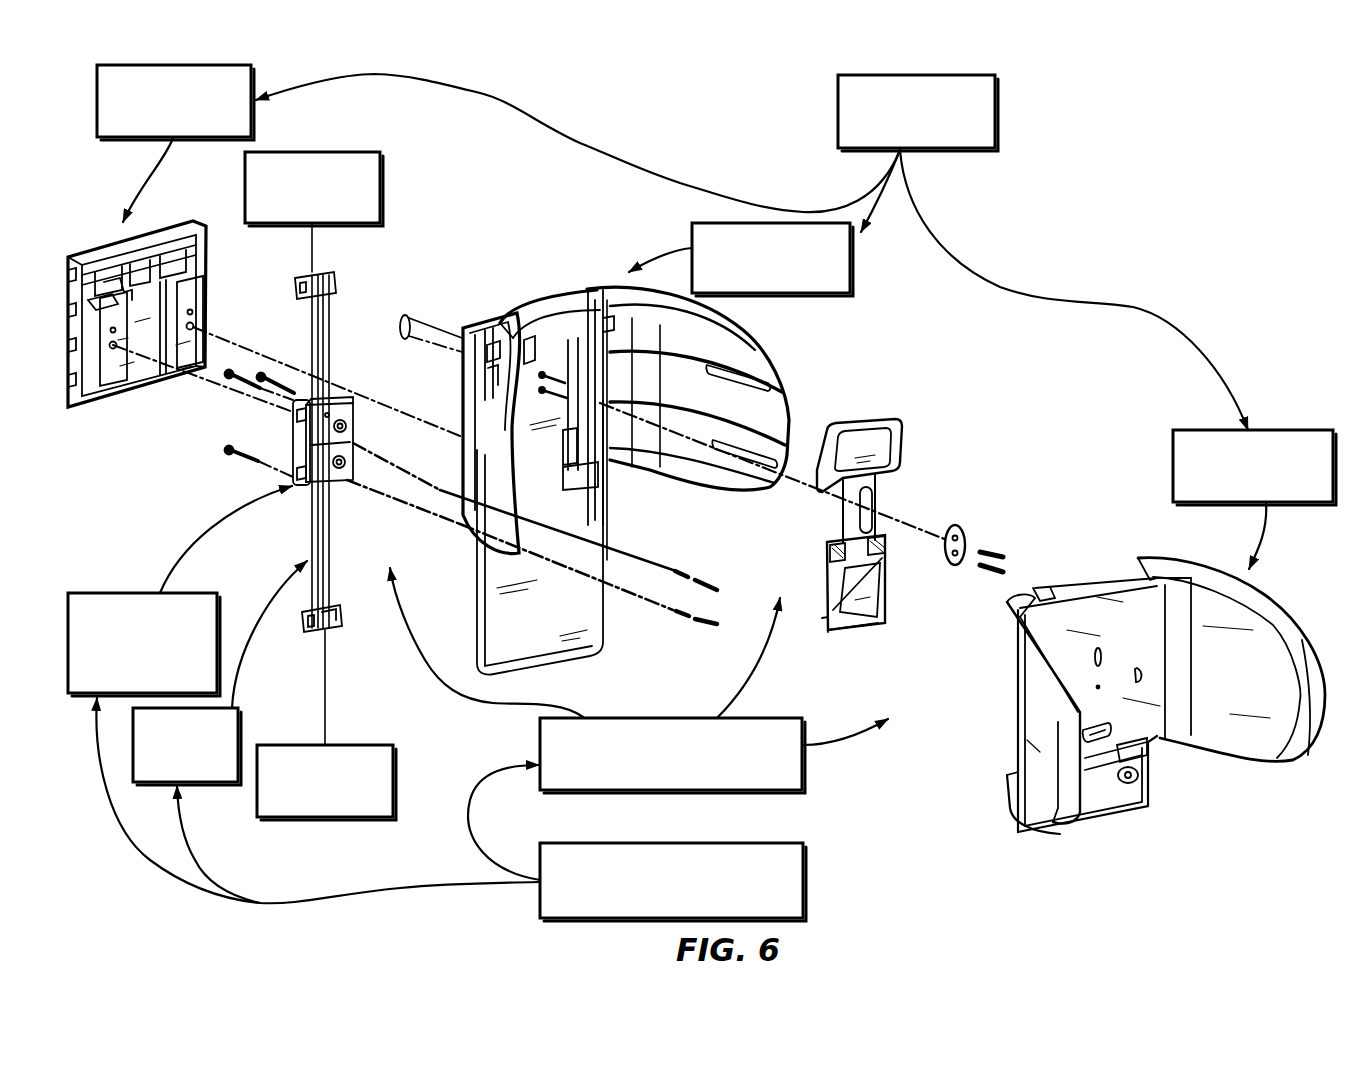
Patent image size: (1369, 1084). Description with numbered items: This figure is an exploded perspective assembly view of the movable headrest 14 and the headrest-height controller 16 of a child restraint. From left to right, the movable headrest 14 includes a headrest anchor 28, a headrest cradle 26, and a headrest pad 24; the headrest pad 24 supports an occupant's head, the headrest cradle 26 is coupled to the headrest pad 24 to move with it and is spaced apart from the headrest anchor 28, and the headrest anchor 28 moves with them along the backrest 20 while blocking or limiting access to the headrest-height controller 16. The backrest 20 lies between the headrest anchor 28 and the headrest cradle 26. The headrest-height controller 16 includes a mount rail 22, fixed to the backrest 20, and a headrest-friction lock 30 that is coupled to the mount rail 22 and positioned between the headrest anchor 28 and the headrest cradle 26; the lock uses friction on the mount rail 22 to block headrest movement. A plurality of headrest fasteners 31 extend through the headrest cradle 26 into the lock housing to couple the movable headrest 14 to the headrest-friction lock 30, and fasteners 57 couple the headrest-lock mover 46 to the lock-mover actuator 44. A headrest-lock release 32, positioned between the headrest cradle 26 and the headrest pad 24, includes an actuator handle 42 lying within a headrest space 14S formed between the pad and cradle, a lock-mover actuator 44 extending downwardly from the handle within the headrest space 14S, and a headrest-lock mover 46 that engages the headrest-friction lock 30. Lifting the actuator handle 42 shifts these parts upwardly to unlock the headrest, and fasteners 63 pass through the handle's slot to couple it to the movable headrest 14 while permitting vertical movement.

The movable headrest 14 is at (995, 115).
The headrest space 14S is at (530, 366).
The headrest-height controller 16 is at (803, 885).
The backrest 20 is at (327, 152).
The mount rail 22 is at (336, 328).
The headrest pad 24 is at (1272, 430).
The headrest cradle 26 is at (820, 293).
The headrest anchor 28 is at (252, 75).
The headrest-friction lock 30 is at (264, 546).
The headrest fasteners 31 is at (692, 624).
The headrest-lock release 32 is at (802, 770).
The actuator handle 42 is at (773, 560).
The lock-mover actuator 44 is at (853, 644).
The headrest-lock mover 46 is at (336, 489).
The fasteners 57 is at (243, 367).
The fasteners 63 is at (997, 541).